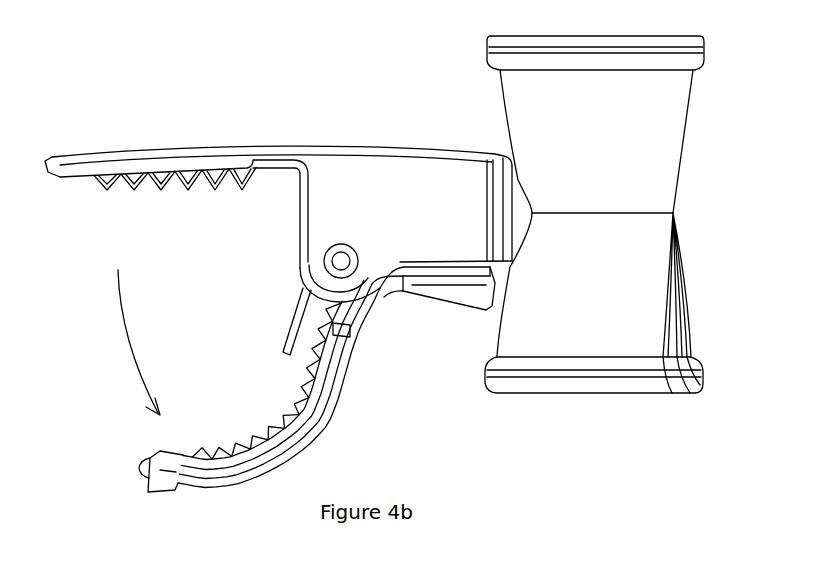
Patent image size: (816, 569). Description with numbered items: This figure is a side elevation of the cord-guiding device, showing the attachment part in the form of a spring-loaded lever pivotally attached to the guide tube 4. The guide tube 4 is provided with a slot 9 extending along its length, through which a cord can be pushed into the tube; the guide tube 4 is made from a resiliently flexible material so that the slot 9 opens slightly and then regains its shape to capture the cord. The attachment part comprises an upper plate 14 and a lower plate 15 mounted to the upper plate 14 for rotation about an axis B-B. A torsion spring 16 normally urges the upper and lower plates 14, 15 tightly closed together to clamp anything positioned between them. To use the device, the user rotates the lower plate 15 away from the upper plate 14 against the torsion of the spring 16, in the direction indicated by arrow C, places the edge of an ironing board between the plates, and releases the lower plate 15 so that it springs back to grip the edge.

The upper plate 14 is at (174, 152).
The guide tube 4 is at (533, 117).
The axis B- B is at (338, 262).
The torsion spring 16 is at (297, 302).
The lower plate 15 is at (222, 473).
The arrow C is at (127, 342).
The slot 9 is at (680, 318).